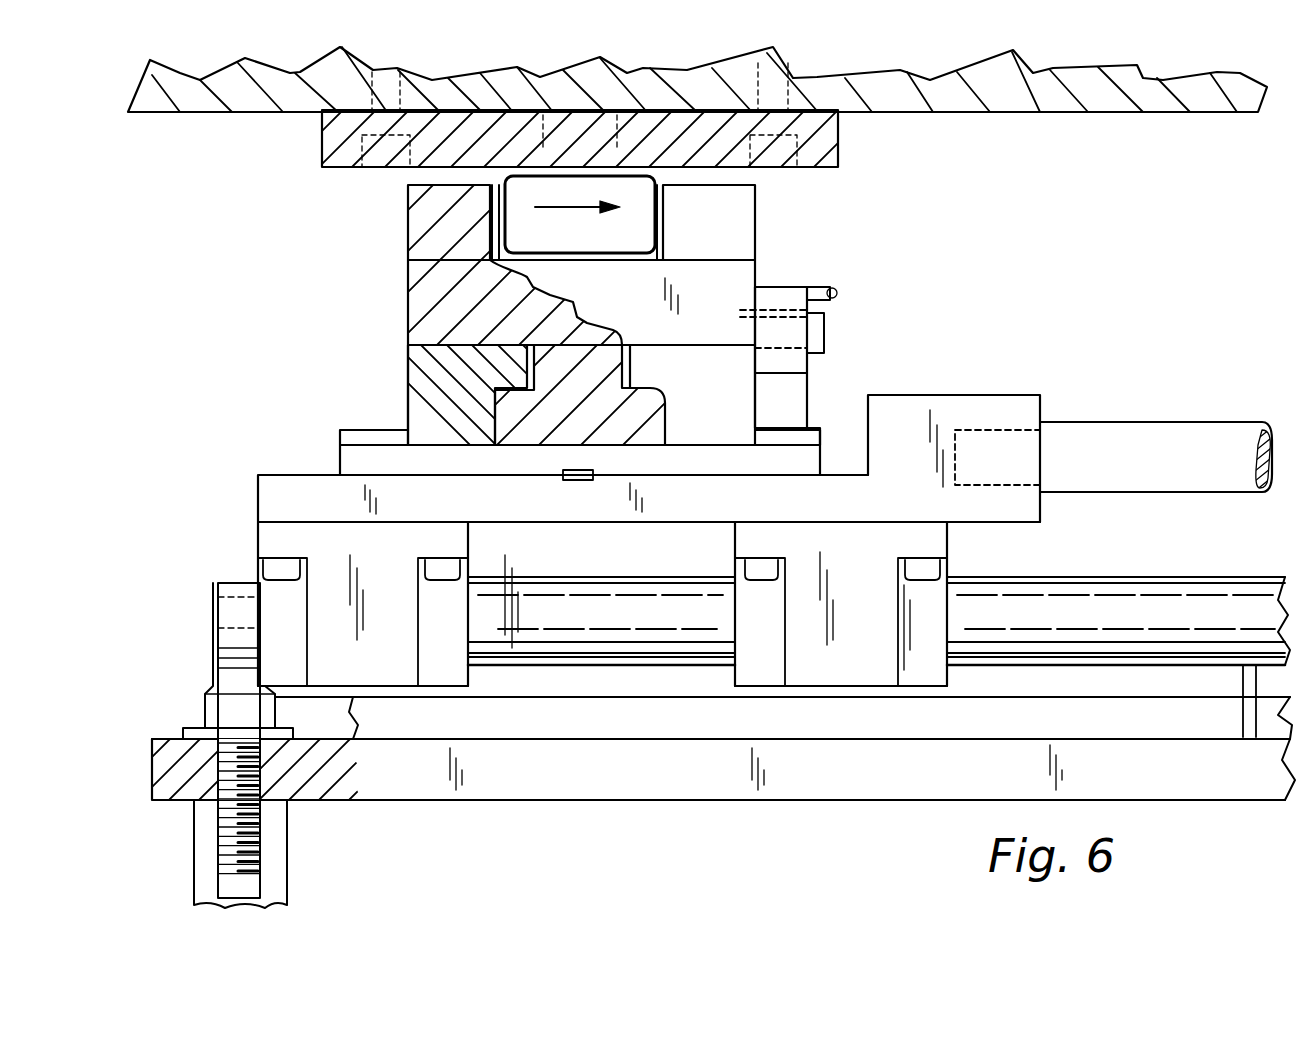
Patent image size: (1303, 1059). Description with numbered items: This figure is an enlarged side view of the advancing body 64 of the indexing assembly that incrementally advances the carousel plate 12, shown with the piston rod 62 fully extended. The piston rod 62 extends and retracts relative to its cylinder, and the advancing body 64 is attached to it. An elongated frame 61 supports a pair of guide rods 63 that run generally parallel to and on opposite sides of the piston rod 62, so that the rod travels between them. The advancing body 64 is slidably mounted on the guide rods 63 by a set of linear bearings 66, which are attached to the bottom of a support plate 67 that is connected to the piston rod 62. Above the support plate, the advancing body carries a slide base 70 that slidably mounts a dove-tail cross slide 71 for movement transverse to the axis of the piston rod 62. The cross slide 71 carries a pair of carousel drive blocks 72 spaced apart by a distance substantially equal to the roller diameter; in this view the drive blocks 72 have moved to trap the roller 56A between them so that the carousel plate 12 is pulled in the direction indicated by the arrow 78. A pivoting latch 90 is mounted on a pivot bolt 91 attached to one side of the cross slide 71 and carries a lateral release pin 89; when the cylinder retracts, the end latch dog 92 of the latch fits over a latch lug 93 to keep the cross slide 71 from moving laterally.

The carousel plate 12 is at (337, 78).
The arrow 78 is at (575, 207).
The roller 56A is at (615, 188).
The carousel drive block 72 is at (418, 205).
The dove-tail cross slide 71 is at (576, 352).
The slide base 70 is at (410, 370).
The pivoting latch 90 is at (780, 287).
The lateral release pin 89 is at (833, 292).
The pivot bolt 91 is at (824, 333).
The end latch dog 92 is at (752, 358).
The latch lug 93 is at (762, 400).
The support plate 67 is at (305, 485).
The linear bearing 66 is at (262, 535).
The advancing body 64 is at (838, 445).
The piston rod 62 is at (1125, 488).
The guide rod 63 is at (641, 655).
The elongated frame 61 is at (510, 790).